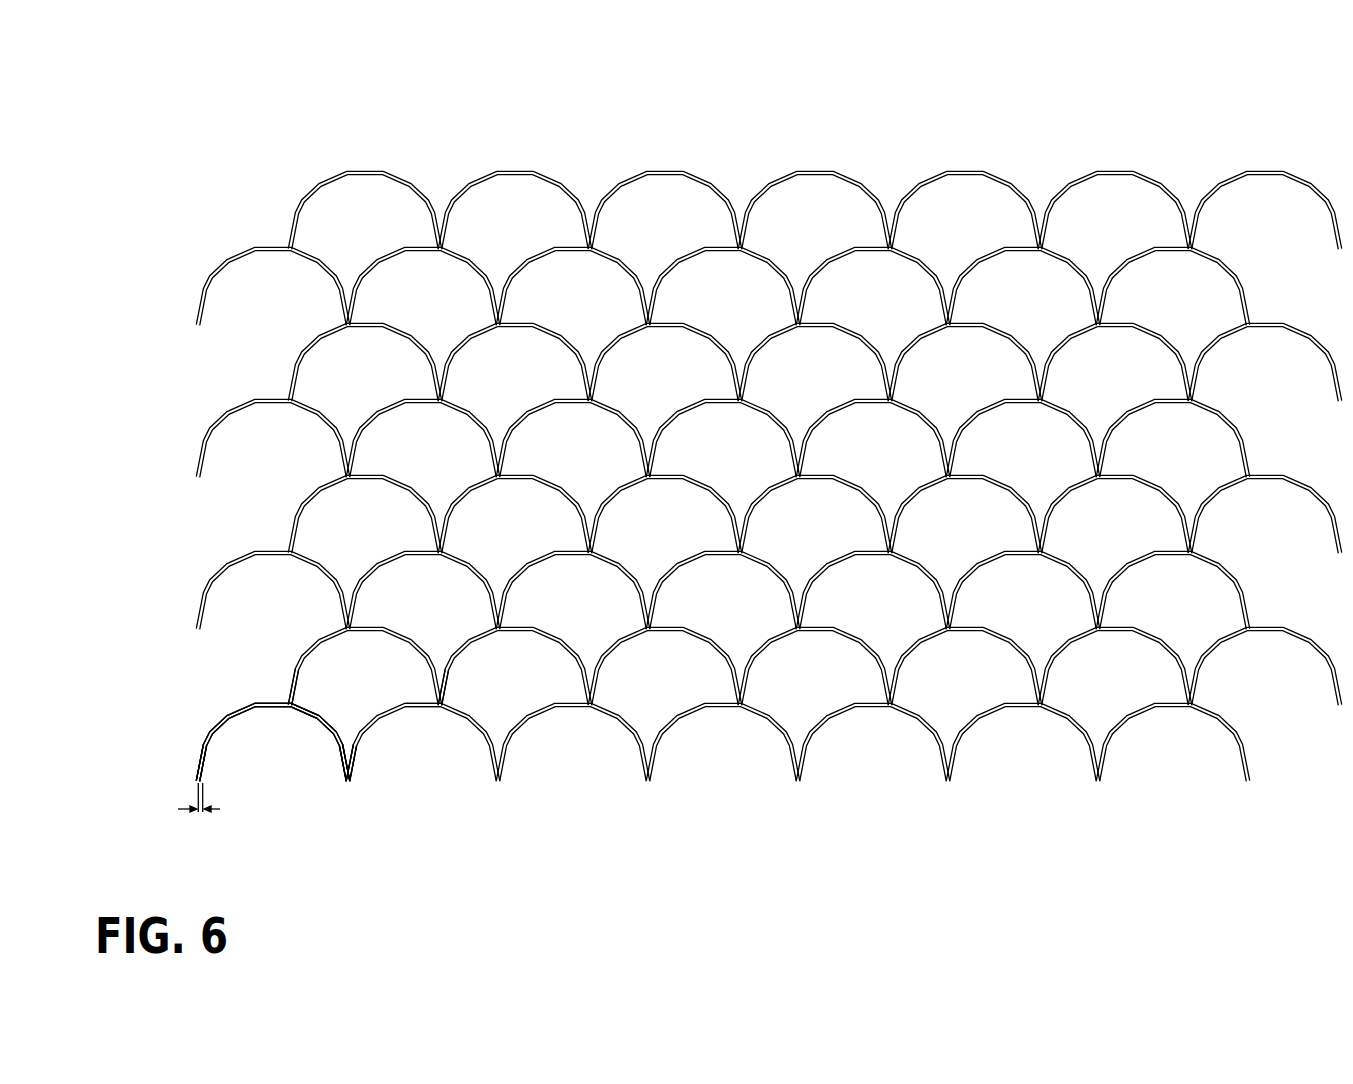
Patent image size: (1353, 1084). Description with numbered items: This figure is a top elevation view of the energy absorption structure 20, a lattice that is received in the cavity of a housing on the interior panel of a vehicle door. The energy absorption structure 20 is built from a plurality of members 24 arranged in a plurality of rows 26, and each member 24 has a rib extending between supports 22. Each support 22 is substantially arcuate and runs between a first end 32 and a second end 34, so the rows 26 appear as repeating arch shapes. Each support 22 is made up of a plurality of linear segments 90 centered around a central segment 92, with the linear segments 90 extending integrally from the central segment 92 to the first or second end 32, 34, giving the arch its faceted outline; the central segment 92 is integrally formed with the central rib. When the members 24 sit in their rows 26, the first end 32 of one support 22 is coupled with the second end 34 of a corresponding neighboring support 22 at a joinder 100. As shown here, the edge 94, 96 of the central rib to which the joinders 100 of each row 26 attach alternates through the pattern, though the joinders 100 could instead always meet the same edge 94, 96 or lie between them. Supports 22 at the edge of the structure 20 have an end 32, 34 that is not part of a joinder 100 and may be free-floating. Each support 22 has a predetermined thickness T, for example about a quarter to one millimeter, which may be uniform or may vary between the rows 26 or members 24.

The energy absorption structure 20 is at (238, 105).
The support 22 is at (307, 653).
The member 24 is at (142, 780).
The row 26 is at (218, 520).
The first end 32 is at (348, 780).
The second end 34 is at (292, 700).
The linear segment 90 is at (203, 743).
The central segment 92 is at (273, 707).
The edge of the central rib 94 is at (292, 703).
The edge of the central rib 96 is at (257, 703).
The joinder 100 is at (436, 719).
The thickness T is at (220, 809).